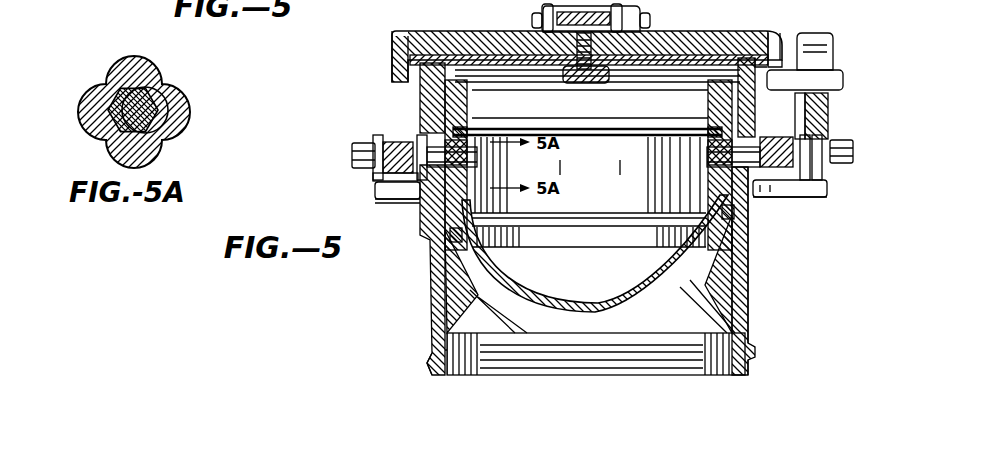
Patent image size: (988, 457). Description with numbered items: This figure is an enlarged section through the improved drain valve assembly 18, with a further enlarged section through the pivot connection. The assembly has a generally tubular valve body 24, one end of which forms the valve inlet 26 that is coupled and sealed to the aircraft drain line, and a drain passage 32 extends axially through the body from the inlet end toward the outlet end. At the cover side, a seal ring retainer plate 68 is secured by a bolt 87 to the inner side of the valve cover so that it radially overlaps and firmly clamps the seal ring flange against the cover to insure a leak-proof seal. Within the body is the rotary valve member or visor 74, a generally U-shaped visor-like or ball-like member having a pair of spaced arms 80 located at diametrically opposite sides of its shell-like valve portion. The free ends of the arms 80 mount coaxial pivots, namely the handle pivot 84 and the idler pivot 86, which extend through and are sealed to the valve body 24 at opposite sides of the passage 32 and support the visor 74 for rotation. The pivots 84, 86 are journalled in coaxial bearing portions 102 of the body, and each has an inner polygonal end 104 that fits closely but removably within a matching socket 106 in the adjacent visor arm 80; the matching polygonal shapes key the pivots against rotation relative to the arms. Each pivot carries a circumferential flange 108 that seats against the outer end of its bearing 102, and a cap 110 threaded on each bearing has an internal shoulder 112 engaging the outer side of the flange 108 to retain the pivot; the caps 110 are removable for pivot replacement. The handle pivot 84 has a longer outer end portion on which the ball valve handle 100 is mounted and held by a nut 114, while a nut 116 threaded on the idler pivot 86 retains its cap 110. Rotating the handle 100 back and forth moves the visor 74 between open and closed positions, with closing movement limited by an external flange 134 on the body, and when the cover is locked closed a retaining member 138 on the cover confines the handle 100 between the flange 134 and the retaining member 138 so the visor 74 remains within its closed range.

In FIG. 5, the drain valve assembly 18 is at (400, 284).
In FIG. 5, the valve body 24 is at (758, 327).
In FIG. 5, the valve inlet 26 is at (585, 378).
In FIG. 5, the drain passage 32 is at (450, 377).
In FIG. 5, the seal ring retainer plate 68 is at (637, 68).
In FIG. 5A, the rotary valve member (visor) 74 is at (192, 106).
In FIG. 5, the rotary valve member (visor) 74 is at (563, 320).
In FIG. 5, the visor arms 80 is at (437, 230).
In FIG. 5, the handle pivot 84 is at (855, 155).
In FIG. 5A, the idler pivot 86 is at (155, 113).
In FIG. 5, the idler pivot 86 is at (352, 158).
In FIG. 5, the bolt 87 is at (587, 86).
In FIG. 5, the ball valve handle 100 is at (848, 120).
In FIG. 5, the bearing portions 102 is at (380, 190).
In FIG. 5A, the inner polygonal end 104 is at (150, 96).
In FIG. 5, the inner polygonal end 104 is at (455, 128).
In FIG. 5A, the socket 106 is at (108, 148).
In FIG. 5, the socket 106 is at (466, 162).
In FIG. 5, the circumferential flange 108 is at (823, 110).
In FIG. 5, the cap 110 is at (800, 120).
In FIG. 5, the internal shoulder 112 is at (373, 200).
In FIG. 5, the nut 114 is at (833, 172).
In FIG. 5, the nut 116 is at (370, 177).
In FIG. 5, the external flange 134 is at (790, 198).
In FIG. 5, the retaining member 138 is at (788, 70).